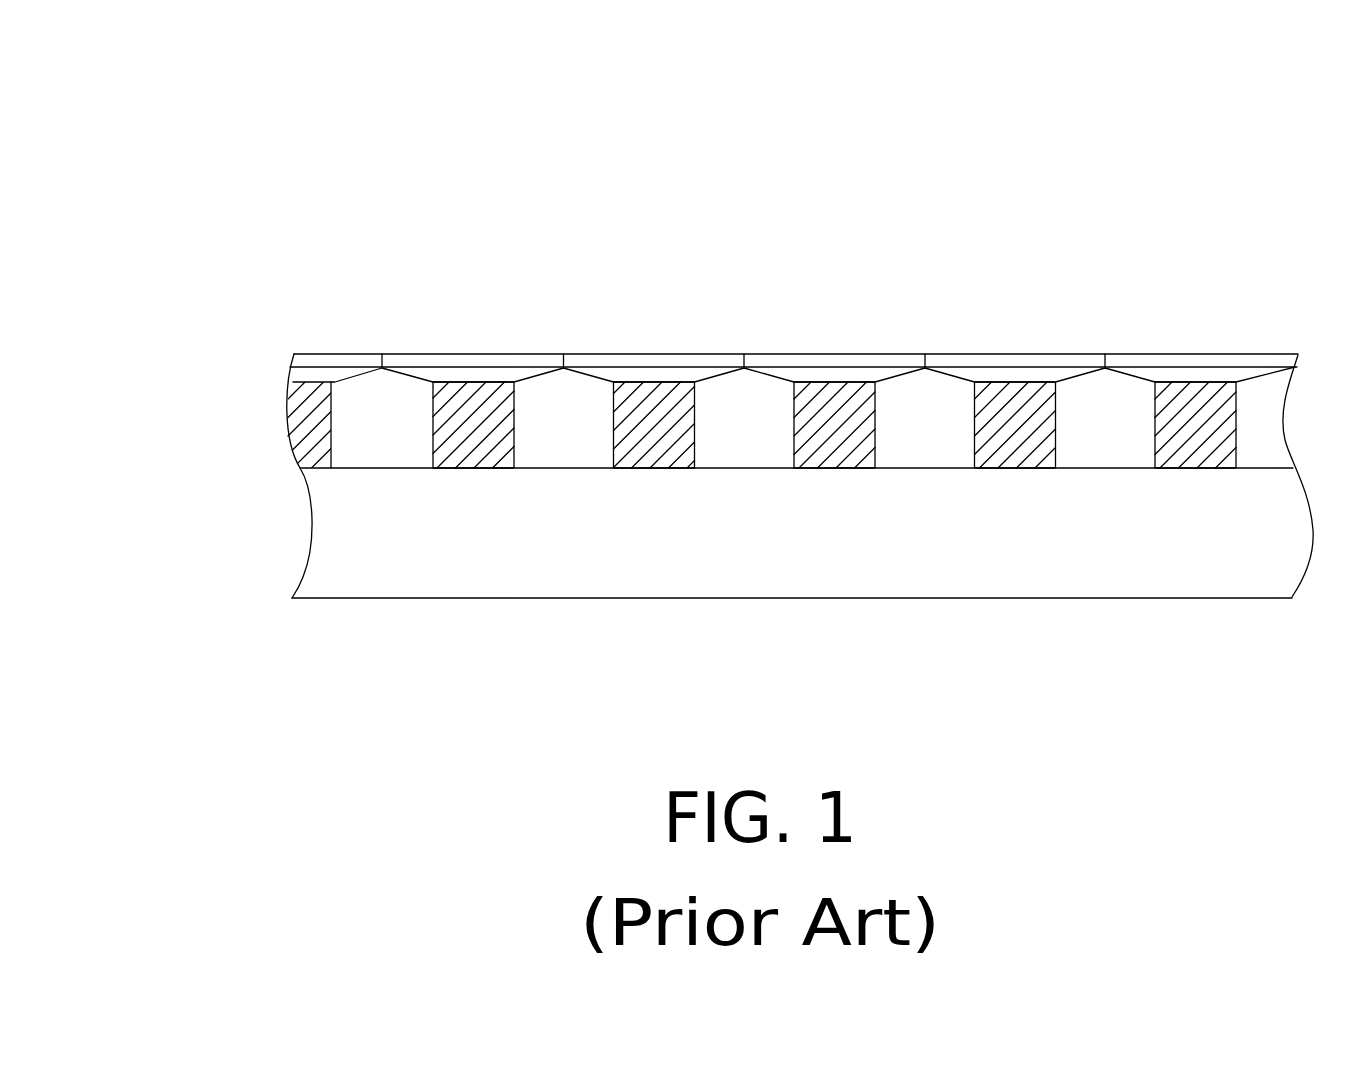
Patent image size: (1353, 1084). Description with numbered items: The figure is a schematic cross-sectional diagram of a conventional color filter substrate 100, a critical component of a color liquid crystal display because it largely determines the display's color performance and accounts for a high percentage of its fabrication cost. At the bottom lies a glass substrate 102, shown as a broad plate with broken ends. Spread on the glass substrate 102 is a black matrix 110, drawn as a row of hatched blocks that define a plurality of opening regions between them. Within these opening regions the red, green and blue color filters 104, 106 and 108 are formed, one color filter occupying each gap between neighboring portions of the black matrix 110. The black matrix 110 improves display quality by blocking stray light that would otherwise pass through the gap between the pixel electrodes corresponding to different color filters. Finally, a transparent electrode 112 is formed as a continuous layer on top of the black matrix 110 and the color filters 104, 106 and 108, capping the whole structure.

The color filter substrate 100 is at (1348, 82).
The glass substrate 102 is at (350, 548).
The red color filter 104 is at (378, 413).
The green color filter 106 is at (565, 415).
The blue color filter 108 is at (757, 417).
The black matrix 110 is at (822, 413).
The transparent electrode 112 is at (1005, 362).